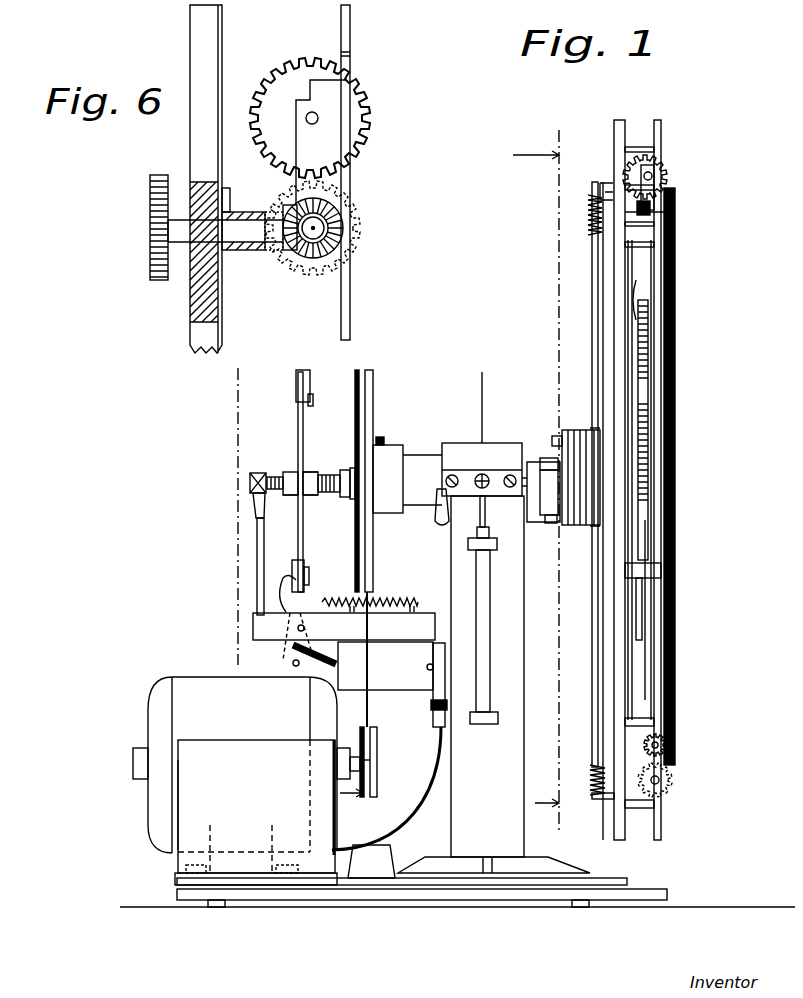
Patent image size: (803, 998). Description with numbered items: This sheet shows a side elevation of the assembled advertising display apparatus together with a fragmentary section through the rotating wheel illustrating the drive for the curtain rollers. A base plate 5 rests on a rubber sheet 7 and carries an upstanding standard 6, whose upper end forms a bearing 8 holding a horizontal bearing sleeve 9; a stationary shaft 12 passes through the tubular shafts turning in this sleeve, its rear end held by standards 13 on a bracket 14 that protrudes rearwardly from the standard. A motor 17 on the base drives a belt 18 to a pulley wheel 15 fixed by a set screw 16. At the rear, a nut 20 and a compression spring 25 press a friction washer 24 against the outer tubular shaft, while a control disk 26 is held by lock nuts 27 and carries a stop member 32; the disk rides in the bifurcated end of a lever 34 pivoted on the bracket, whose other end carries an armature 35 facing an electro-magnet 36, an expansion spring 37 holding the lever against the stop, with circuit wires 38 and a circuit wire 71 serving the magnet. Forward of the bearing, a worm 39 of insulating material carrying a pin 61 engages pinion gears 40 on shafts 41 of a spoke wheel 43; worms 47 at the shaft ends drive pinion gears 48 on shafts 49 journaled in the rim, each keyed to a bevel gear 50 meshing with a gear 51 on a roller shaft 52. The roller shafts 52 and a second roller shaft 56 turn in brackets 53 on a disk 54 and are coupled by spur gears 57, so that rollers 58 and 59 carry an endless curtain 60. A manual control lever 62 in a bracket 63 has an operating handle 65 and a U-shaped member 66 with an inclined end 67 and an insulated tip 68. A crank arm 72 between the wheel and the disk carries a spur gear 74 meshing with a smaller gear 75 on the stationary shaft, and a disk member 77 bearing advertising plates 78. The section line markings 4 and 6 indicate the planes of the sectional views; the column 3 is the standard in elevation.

In FIG. 1, the column 3 is at (512, 675).
In FIG. 1, the section line 4- 4 is at (539, 484).
In FIG. 1, the base plate 5 is at (462, 900).
In FIG. 1, the standard 6 is at (296, 583).
In FIG. 1, the rubber sheet 7 is at (217, 907).
In FIG. 1, the bearing 8 is at (455, 448).
In FIG. 1, the bearing sleeve 9 is at (402, 460).
In FIG. 1, the stationary shaft 12 is at (250, 483).
In FIG. 1, the standards 13 is at (257, 560).
In FIG. 1, the bracket 14 is at (285, 632).
In FIG. 1, the pulley wheel 15 is at (374, 405).
In FIG. 1, the set screw 16 is at (384, 440).
In FIG. 1, the motor 17 is at (190, 702).
In FIG. 1, the belt 18 is at (377, 708).
In FIG. 1, the nut 20 is at (326, 497).
In FIG. 1, the friction washer 24 is at (336, 470).
In FIG. 1, the compression spring 25 is at (332, 497).
In FIG. 1, the control disk 26 is at (304, 432).
In FIG. 1, the lock nuts 27 is at (180, 800).
In FIG. 1, the stop member 32 is at (312, 382).
In FIG. 1, the lever 34 is at (320, 590).
In FIG. 1, the armature 35 is at (325, 665).
In FIG. 1, the electro-magnet 36 is at (390, 660).
In FIG. 1, the expansion spring 37 is at (394, 600).
In FIG. 1, the circuit wires 38 is at (388, 824).
In FIG. 1, the worm 39 is at (580, 528).
In FIG. 1, the pinion gears 40 is at (593, 430).
In FIG. 1, the shafts 41 is at (592, 325).
In FIG. 6, the spoke wheel 43 is at (192, 345).
In FIG. 1, the spoke wheel 43 is at (627, 695).
In FIG. 1, the worms 47 is at (600, 200).
In FIG. 6, the pinion gears 48 is at (150, 228).
In FIG. 1, the pinion gears 48 is at (600, 216).
In FIG. 6, the shafts 49 is at (208, 232).
In FIG. 6, the bevel gear 50 is at (290, 258).
In FIG. 1, the bevel gear 50 is at (652, 210).
In FIG. 6, the gear 51 is at (338, 210).
In FIG. 6, the roller shaft 52 is at (313, 244).
In FIG. 1, the roller shaft 52 is at (666, 214).
In FIG. 6, the brackets 53 is at (330, 130).
In FIG. 6, the disk 54 is at (352, 316).
In FIG. 6, the second roller shaft 56 is at (306, 118).
In FIG. 6, the spur gears 57 is at (292, 60).
In FIG. 1, the spur gears 57 is at (668, 170).
In FIG. 1, the roller 58 is at (670, 748).
In FIG. 1, the roller 59 is at (672, 778).
In FIG. 1, the endless curtain 60 is at (675, 308).
In FIG. 1, the pin 61 is at (555, 434).
In FIG. 1, the manual control lever 62 is at (528, 522).
In FIG. 1, the bracket 63 is at (485, 470).
In FIG. 1, the operating handle 65 is at (436, 520).
In FIG. 1, the U-shaped member 66 is at (547, 492).
In FIG. 1, the inclined end 67 is at (552, 522).
In FIG. 1, the insulated tip 68 is at (547, 460).
In FIG. 1, the circuit wire 71 is at (478, 522).
In FIG. 1, the crank arm 72 is at (642, 300).
In FIG. 1, the spur gear 74 is at (653, 286).
In FIG. 1, the gear 75 is at (655, 500).
In FIG. 1, the disk member 77 is at (627, 250).
In FIG. 1, the advertising plates 78 is at (662, 455).